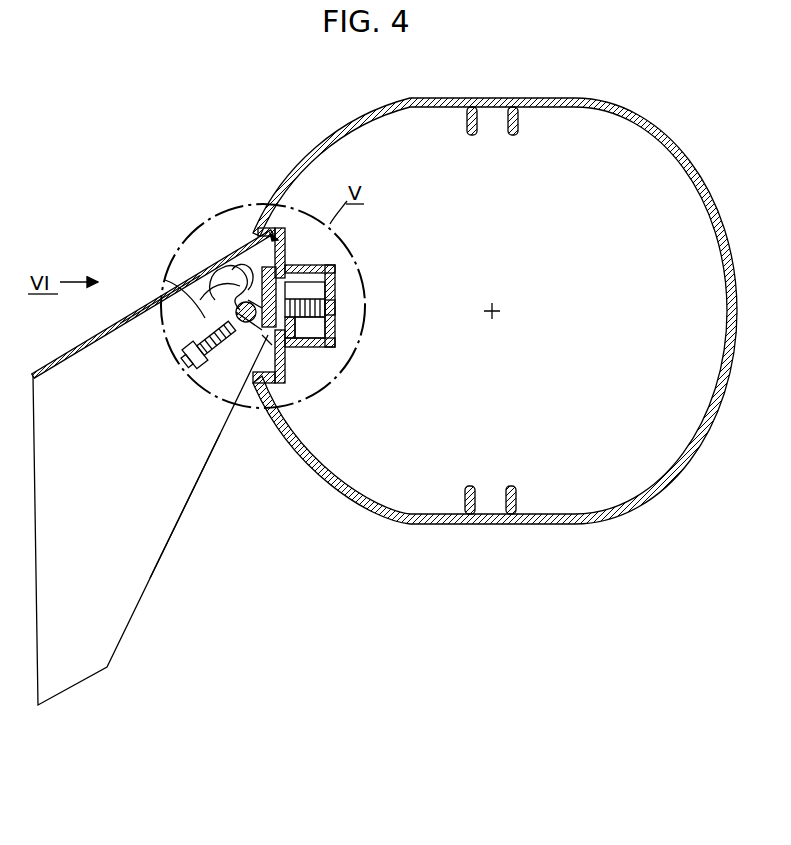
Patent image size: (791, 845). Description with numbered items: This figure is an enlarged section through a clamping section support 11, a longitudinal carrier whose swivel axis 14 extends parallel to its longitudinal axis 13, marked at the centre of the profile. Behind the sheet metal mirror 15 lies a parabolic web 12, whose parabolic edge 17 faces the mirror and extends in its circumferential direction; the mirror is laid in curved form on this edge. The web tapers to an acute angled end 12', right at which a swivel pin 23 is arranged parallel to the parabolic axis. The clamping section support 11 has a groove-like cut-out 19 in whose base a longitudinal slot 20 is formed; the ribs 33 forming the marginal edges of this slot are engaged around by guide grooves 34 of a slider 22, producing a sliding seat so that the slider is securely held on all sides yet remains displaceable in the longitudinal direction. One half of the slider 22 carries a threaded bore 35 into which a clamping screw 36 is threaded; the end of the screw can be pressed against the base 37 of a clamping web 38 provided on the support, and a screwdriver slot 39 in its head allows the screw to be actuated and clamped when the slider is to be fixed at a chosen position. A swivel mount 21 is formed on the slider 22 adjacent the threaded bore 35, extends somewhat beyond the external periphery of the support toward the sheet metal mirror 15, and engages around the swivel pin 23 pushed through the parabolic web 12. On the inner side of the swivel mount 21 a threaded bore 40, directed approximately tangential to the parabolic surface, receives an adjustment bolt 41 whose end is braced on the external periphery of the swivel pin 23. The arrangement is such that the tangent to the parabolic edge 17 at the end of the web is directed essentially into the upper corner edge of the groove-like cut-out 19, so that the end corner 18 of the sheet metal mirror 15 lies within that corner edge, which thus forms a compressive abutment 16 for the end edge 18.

The clamping section support 11 is at (578, 98).
The parabolic web 12 is at (150, 528).
The acute angled tapering end 12' is at (196, 506).
The longitudinal axis 13 is at (496, 307).
The swivel axis 14 is at (200, 300).
The sheet metal mirror 15 is at (70, 357).
The compressive abutment 16 is at (270, 252).
The parabolic edge 17 is at (78, 358).
The end corner 18 is at (265, 196).
The groove-like cut-out 19 is at (286, 244).
The longitudinal slot 20 is at (325, 352).
The swivel mount 21 is at (164, 279).
The slider 22 is at (267, 350).
The swivel pin 23 is at (216, 292).
The rib 33 is at (331, 270).
The guide groove 34 is at (250, 300).
The threaded bore 35 is at (304, 287).
The clamping screw 36 is at (338, 338).
The base 37 is at (343, 312).
The clamping web 38 is at (340, 372).
The screwdriver slot 39 is at (232, 290).
The threaded bore 40 is at (214, 318).
The adjustment bolt 41 is at (222, 331).